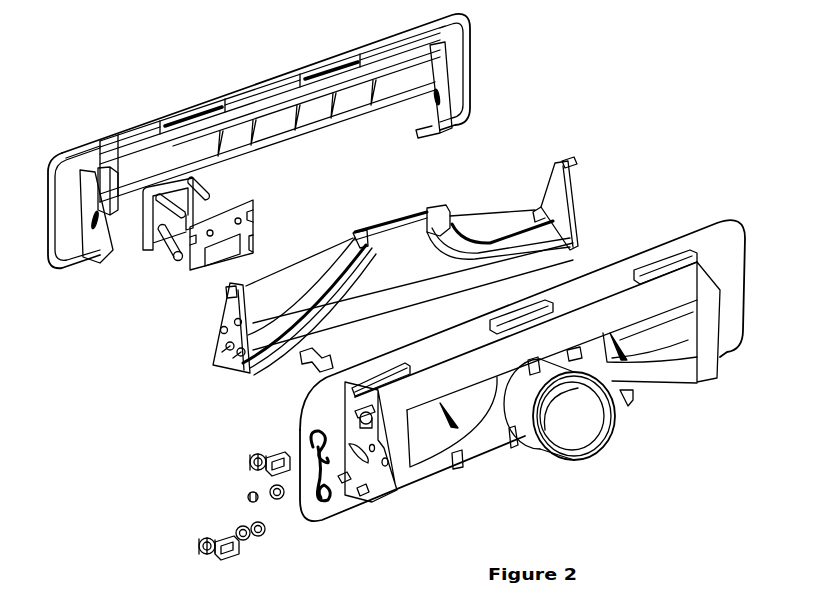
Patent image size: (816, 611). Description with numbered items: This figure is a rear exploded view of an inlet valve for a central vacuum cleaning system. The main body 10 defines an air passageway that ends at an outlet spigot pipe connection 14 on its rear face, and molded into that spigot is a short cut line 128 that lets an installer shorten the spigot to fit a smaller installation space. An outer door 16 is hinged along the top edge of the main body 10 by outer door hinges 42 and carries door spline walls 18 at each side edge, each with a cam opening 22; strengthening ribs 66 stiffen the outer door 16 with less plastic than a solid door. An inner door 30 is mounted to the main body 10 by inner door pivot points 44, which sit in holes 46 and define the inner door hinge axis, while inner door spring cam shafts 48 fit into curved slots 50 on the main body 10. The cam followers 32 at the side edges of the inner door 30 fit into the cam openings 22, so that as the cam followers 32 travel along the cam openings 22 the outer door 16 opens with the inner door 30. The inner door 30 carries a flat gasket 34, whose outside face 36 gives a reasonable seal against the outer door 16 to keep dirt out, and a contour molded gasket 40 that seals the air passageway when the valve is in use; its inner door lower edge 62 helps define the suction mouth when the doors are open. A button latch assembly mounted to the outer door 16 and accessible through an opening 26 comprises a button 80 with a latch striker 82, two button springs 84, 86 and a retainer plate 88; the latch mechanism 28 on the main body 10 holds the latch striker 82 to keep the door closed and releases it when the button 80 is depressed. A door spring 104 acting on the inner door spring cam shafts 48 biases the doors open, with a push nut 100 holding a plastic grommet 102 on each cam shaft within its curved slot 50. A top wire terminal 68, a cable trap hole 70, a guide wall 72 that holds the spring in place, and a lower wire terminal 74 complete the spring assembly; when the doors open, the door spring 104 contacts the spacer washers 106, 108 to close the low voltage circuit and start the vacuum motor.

The main body 10 is at (760, 254).
The outlet spigot pipe connection 14 is at (595, 452).
The outer door 16 is at (497, 37).
The door spline walls 18 is at (447, 130).
The cam opening 22 is at (442, 100).
The opening 26 is at (112, 163).
The latch mechanism 28 is at (300, 362).
The inner door 30 is at (604, 173).
The cam follower 32 is at (215, 333).
The flat gasket 34 is at (440, 226).
The outside face of the flat gasket 36 is at (412, 287).
The contour molded gasket 40 is at (497, 262).
The outer door hinges 42 is at (263, 90).
The inner door pivot points 44 is at (226, 298).
The holes 46 is at (362, 400).
The inner door spring cam shafts 48 is at (228, 360).
The curved slots 50 is at (378, 456).
The inner door lower edge 62 is at (377, 305).
The strengthening ribs 66 is at (217, 128).
The top wire terminal 68 is at (245, 455).
The cable trap hole 70 is at (387, 462).
The guide wall 72 is at (385, 488).
The lower wire terminal 74 is at (197, 541).
The button 80 is at (147, 238).
The latch striker 82 is at (177, 215).
The button spring 84 is at (170, 260).
The button spring 86 is at (210, 208).
The retainer plate 88 is at (188, 275).
The push nut 100 is at (247, 493).
The plastic grommet 102 is at (283, 497).
The door spring 104 is at (328, 498).
The spacer washer 106 is at (250, 540).
The spacer washer 108 is at (265, 533).
The short cut line 128 is at (515, 444).